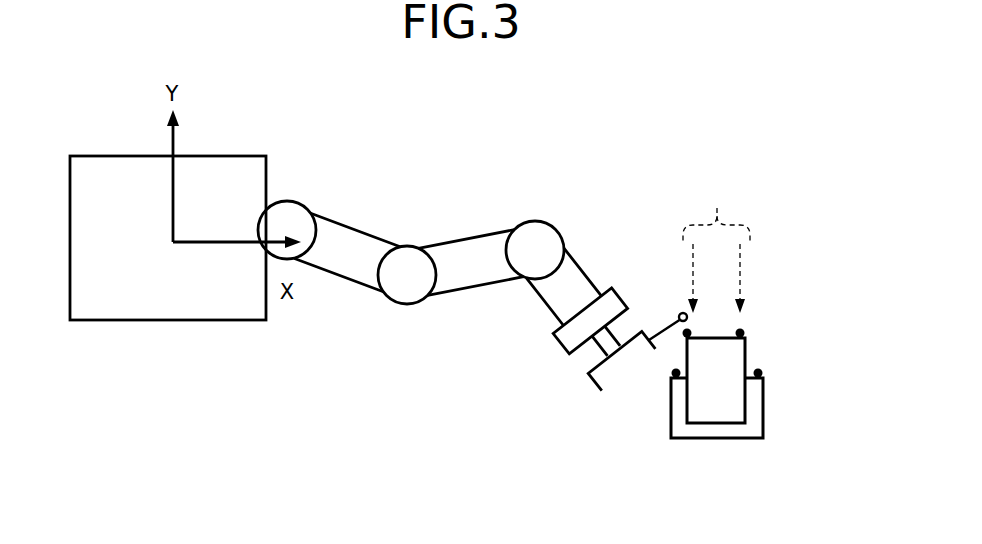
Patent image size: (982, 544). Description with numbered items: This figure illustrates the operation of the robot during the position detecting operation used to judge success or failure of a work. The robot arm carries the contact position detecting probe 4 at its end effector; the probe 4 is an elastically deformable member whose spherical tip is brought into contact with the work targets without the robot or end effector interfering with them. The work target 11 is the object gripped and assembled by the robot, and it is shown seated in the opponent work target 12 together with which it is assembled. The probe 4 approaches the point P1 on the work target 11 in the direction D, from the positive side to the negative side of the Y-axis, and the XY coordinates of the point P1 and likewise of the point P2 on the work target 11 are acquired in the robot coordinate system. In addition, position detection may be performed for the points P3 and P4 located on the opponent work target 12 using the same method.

The contact position detecting probe 4 is at (658, 320).
The work target 11 is at (738, 352).
The work target 12 is at (752, 424).
The point P1 is at (685, 336).
The point P2 is at (745, 334).
The point P3 is at (674, 376).
The point P4 is at (763, 374).
The direction D is at (716, 248).